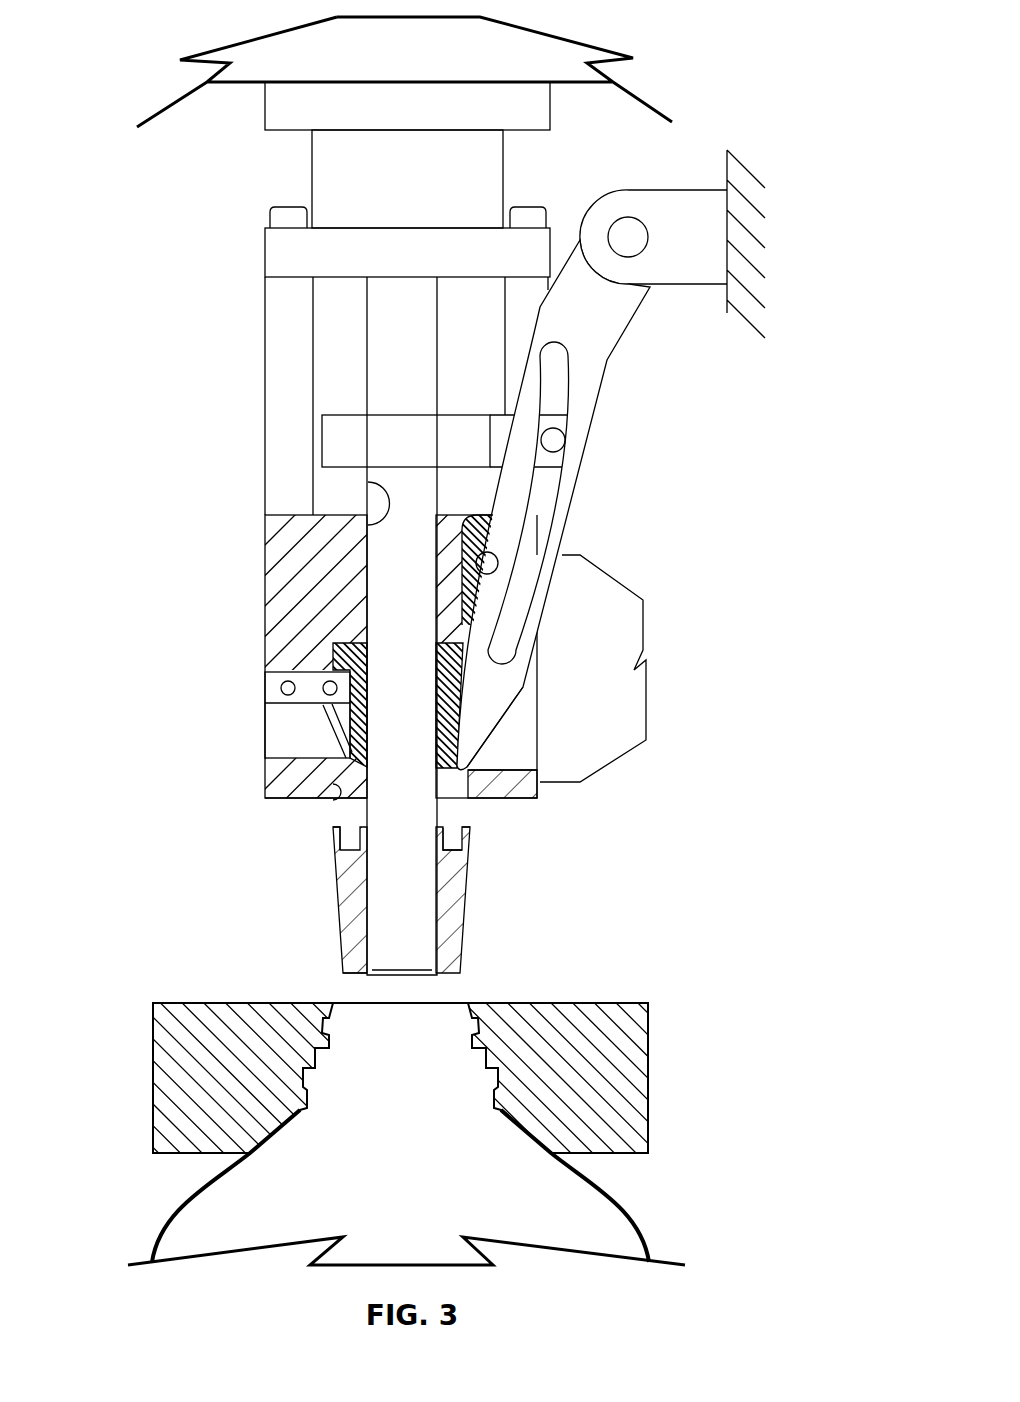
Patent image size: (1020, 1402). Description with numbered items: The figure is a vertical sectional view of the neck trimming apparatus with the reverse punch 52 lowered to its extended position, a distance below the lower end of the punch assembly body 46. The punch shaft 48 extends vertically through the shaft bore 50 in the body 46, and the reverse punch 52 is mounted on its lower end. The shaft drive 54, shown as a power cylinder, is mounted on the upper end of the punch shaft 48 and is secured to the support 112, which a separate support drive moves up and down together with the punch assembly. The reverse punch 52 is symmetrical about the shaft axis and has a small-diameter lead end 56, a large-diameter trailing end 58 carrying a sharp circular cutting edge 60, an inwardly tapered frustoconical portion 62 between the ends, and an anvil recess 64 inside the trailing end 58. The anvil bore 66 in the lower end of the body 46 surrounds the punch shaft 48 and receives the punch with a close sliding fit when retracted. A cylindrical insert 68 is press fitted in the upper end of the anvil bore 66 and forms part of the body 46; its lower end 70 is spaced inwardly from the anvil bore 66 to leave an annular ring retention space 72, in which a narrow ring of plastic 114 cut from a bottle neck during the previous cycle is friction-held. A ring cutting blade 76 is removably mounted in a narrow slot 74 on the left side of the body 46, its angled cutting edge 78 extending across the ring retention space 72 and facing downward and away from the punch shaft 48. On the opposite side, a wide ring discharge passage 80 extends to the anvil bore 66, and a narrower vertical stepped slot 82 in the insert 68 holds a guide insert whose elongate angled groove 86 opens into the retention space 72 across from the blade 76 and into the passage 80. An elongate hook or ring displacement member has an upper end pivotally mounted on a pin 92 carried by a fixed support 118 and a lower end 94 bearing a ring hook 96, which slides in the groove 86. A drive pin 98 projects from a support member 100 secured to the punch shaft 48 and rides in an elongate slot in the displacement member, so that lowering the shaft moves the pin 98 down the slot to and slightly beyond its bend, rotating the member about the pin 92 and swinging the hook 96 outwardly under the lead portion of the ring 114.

The body 46 is at (265, 550).
The punch shaft 48 is at (393, 330).
The shaft bore 50 is at (368, 483).
The reverse punch 52 is at (322, 931).
The shaft drive 54 is at (310, 178).
The lead end 56 is at (340, 978).
The trailing end 58 is at (333, 827).
The cutting edge 60 is at (467, 828).
The frustoconical portion 62 is at (467, 940).
The anvil recess 64 is at (443, 827).
The anvil bore 66 is at (333, 803).
The cylindrical insert 68 is at (320, 647).
The lower end 70 is at (372, 788).
The ring retention space 72 is at (265, 797).
The slot 74 is at (282, 727).
The ring cutting blade 76 is at (270, 686).
The cutting edge 78 is at (333, 730).
The ring discharge passage 80 is at (510, 760).
The stepped slot 82 is at (435, 670).
The groove 86 is at (458, 540).
The pin 92 is at (630, 235).
The lower end 94 is at (500, 688).
The ring hook 96 is at (510, 760).
The drive pin 98 is at (553, 443).
The support member 100 is at (457, 452).
The support 112 is at (583, 38).
The ring of plastic 114 is at (473, 745).
The fixed support 118 is at (757, 177).